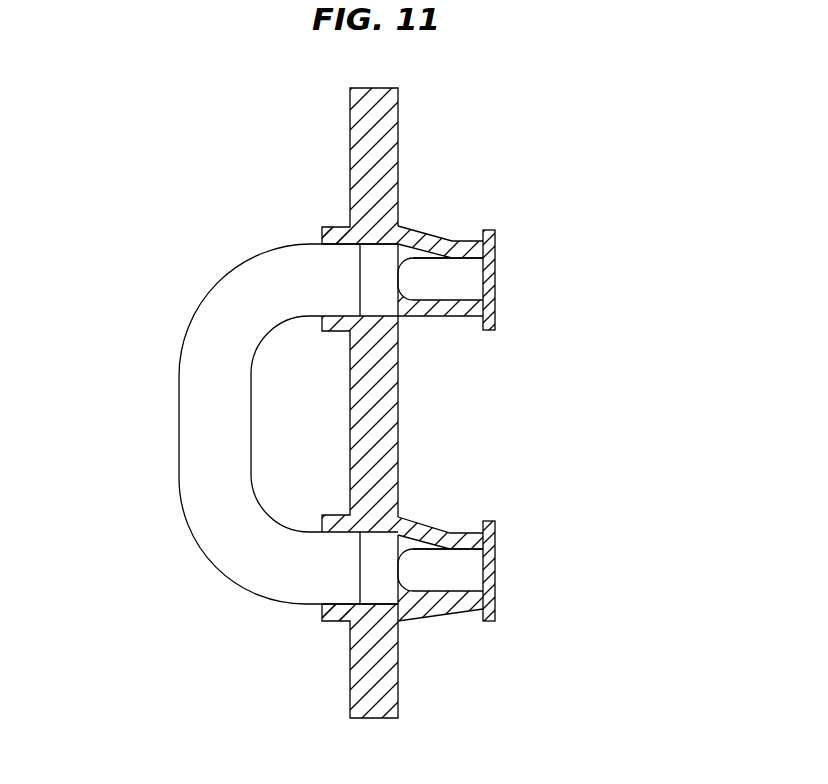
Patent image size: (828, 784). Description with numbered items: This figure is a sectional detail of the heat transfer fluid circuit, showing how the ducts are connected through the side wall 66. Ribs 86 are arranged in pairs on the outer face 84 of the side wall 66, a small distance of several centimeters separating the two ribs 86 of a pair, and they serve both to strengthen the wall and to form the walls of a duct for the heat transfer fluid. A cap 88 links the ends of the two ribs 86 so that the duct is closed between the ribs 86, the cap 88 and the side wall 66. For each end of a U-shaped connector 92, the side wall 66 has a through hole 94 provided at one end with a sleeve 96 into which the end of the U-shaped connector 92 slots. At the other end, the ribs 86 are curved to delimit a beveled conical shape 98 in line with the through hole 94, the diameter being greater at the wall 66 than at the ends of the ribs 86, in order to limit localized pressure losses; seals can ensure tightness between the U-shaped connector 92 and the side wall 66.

The side wall 66 is at (400, 177).
The outer face 84 is at (402, 118).
The ribs 86 is at (460, 609).
The cap 88 is at (497, 282).
The U-shaped connector 92 is at (207, 462).
The through hole 94 is at (378, 261).
The sleeve 96 is at (339, 226).
The beveled conical shape 98 is at (405, 304).